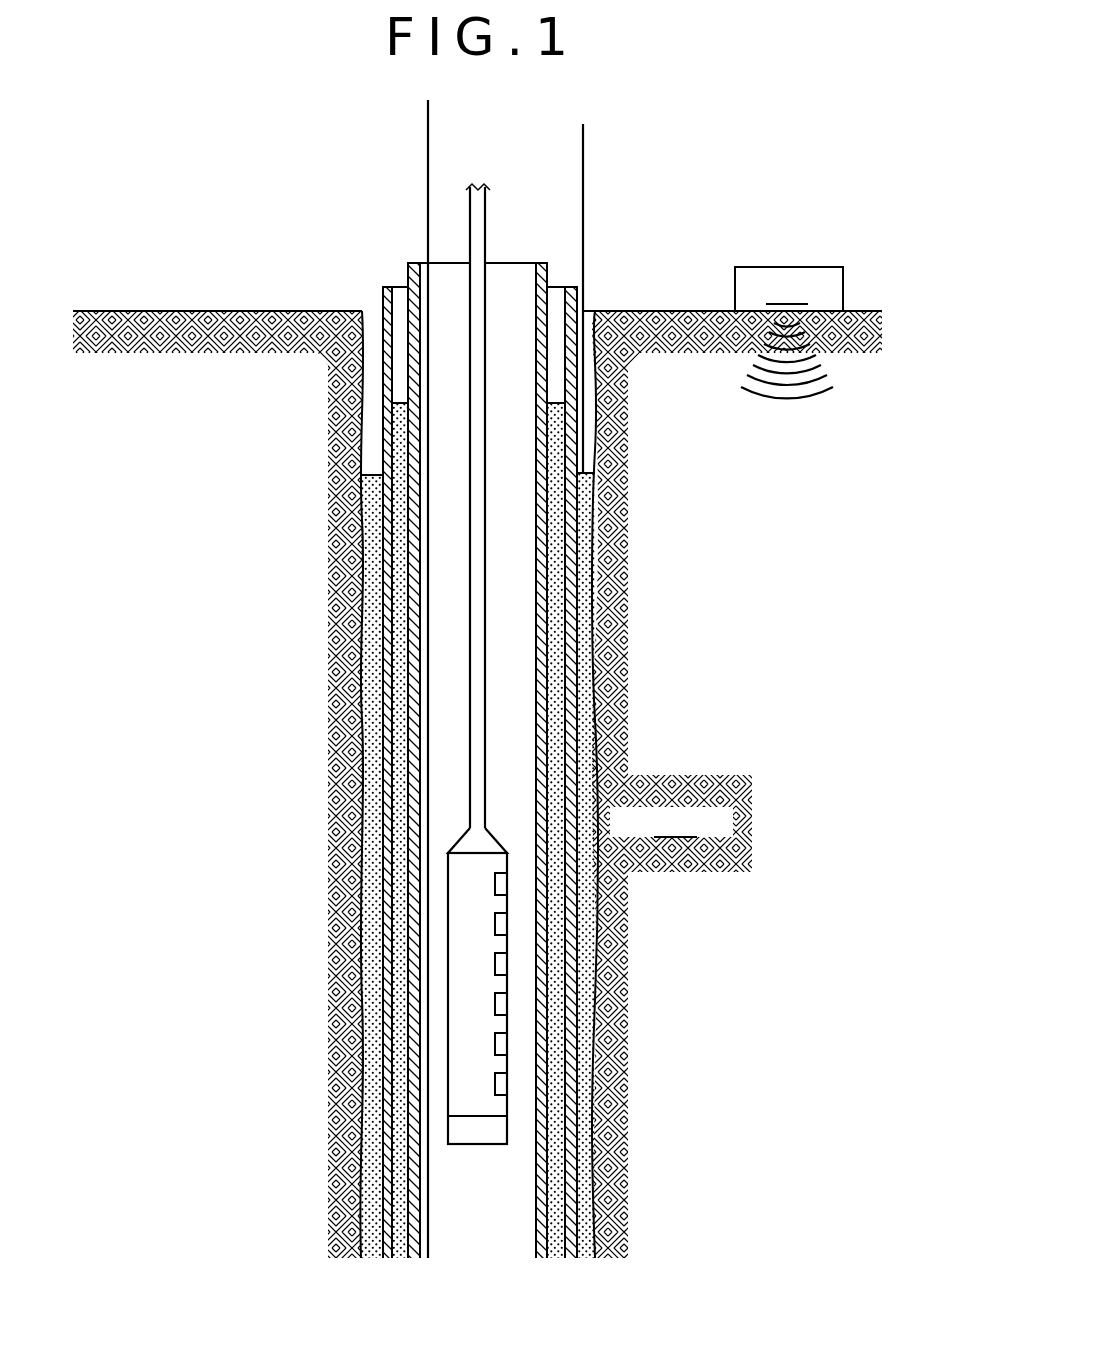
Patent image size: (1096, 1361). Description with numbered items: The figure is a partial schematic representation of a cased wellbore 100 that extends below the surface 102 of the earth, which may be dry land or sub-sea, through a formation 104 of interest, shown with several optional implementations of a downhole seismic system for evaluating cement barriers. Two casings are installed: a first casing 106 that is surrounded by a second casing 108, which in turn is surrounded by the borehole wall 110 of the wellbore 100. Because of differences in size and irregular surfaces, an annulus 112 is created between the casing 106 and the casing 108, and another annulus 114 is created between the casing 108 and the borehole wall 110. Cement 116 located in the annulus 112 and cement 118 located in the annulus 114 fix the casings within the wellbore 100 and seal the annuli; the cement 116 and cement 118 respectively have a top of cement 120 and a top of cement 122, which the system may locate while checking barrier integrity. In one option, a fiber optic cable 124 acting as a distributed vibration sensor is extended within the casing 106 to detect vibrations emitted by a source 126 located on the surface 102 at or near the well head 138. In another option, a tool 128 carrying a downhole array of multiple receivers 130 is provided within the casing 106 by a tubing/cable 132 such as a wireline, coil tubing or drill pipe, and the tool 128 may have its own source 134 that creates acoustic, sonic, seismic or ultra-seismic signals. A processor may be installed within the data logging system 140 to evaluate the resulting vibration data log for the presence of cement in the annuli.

The wellbore 100 is at (489, 1232).
The surface 102 is at (643, 308).
The formation 104 is at (671, 822).
The first casing 106 is at (543, 613).
The second casing 108 is at (571, 687).
The borehole wall 110 is at (606, 440).
The annulus 112 is at (404, 297).
The annulus 114 is at (376, 327).
The cement 116 is at (396, 759).
The cement 118 is at (371, 690).
The top of cement 120 is at (404, 387).
The top of cement 122 is at (376, 463).
The fiber optic cable 124 is at (427, 122).
The source 126 is at (789, 332).
The tool 128 is at (437, 918).
The receivers 130 is at (510, 966).
The tubing/cable 132 is at (467, 214).
The source 134 is at (511, 1128).
The well head 138 is at (511, 250).
The data logging system 140 is at (586, 155).